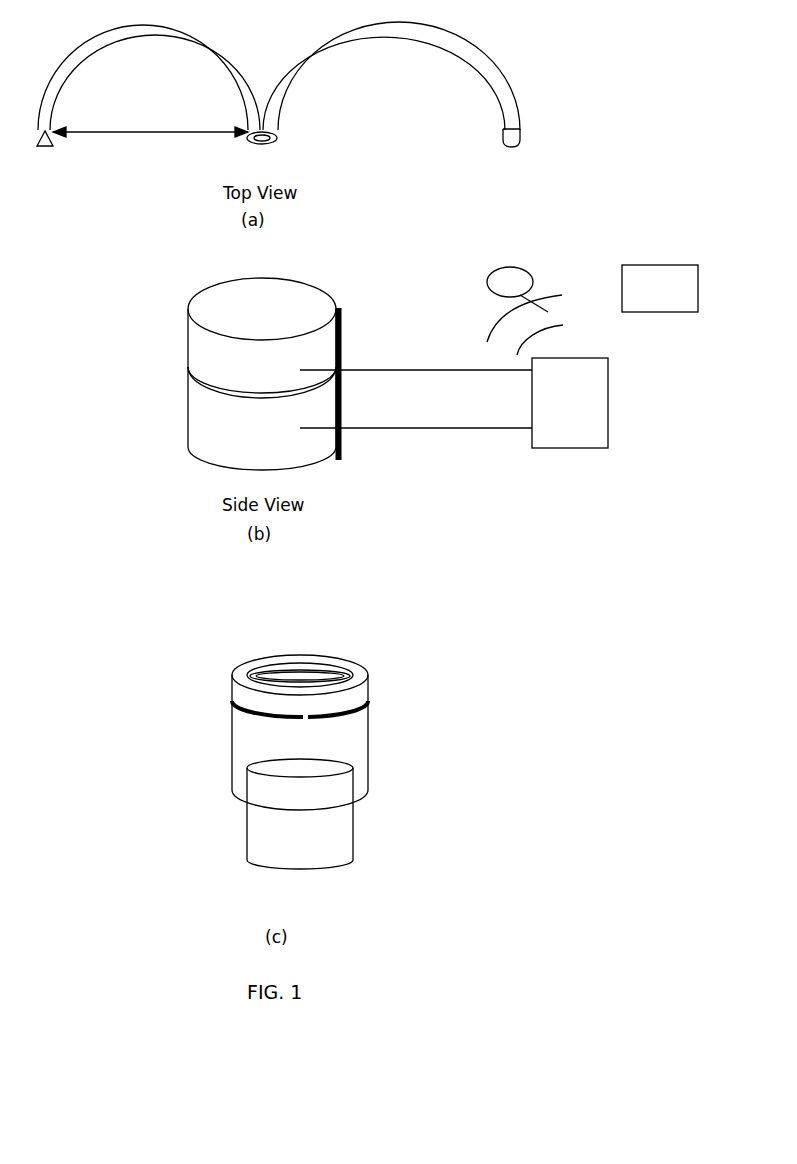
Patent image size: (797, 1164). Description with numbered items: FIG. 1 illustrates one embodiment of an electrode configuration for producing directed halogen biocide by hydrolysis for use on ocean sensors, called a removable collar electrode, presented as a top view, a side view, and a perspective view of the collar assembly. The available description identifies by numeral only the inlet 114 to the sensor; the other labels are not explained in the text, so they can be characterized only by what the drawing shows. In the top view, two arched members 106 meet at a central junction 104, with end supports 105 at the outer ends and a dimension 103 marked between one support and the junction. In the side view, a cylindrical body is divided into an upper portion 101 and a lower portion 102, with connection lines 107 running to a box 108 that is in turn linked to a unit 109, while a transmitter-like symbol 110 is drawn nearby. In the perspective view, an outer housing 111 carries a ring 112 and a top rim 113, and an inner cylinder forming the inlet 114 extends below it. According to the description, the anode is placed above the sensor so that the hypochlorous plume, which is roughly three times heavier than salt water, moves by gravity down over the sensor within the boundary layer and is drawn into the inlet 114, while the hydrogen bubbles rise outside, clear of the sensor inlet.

The upper cylindrical body portion 101 is at (203, 360).
The lower cylindrical body portion 102 is at (218, 450).
The arch span dimension 103 is at (150, 118).
The central junction of arches 104 is at (258, 154).
The arch feet / end supports 105 is at (284, 154).
The double arch members 106 is at (306, 60).
The connection lines 107 is at (416, 384).
The control unit 108 is at (576, 424).
The power / signal source 109 is at (593, 358).
The wireless transmitter 110 is at (503, 280).
The outer cylindrical housing 111 is at (367, 703).
The inner ring 112 is at (337, 670).
The top rim 113 is at (310, 655).
The inlet 114 is at (338, 807).